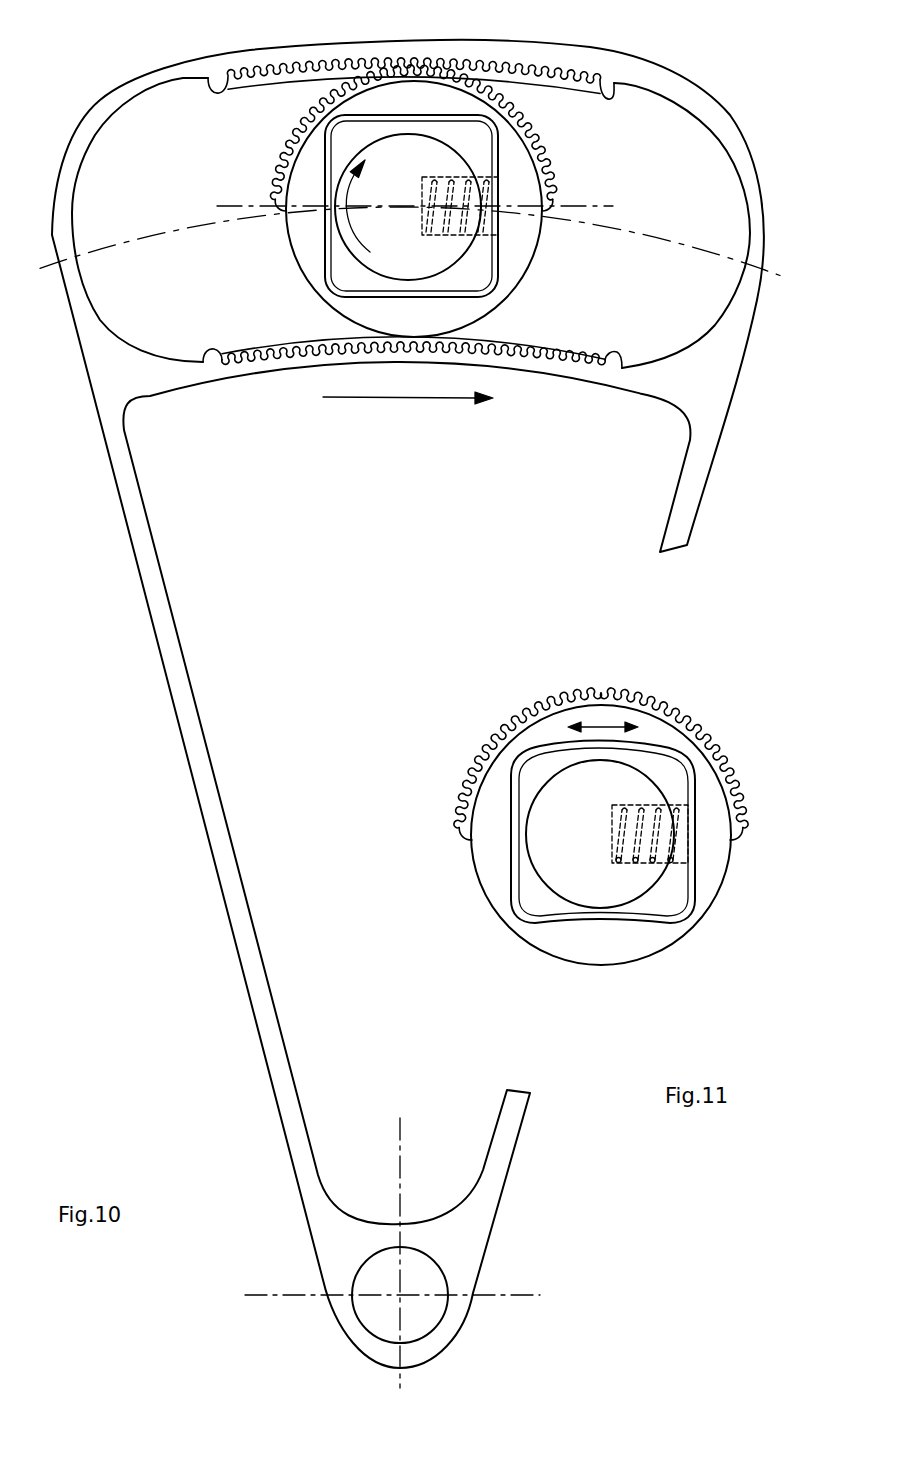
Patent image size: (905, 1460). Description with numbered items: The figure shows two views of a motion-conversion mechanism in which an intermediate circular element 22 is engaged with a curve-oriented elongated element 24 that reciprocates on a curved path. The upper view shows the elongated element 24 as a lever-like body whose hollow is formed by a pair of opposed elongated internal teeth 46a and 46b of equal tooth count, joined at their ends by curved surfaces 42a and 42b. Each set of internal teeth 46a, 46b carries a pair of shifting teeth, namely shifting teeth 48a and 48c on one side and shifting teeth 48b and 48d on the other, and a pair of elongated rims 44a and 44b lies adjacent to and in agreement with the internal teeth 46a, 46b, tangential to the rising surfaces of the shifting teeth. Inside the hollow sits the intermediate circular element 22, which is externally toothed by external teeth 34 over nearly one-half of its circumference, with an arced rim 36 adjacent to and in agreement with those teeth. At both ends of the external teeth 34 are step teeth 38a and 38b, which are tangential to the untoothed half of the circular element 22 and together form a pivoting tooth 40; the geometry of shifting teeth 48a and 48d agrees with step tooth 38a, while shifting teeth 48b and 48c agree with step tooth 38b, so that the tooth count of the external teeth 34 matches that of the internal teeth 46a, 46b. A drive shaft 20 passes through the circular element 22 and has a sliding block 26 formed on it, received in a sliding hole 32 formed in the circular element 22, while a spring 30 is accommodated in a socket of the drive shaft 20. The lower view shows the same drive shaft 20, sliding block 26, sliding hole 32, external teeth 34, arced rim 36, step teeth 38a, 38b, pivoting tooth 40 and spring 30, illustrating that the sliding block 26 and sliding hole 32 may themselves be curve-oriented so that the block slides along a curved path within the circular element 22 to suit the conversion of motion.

In FIG. 10, the drive shaft 20 is at (457, 250).
In FIG. 11, the drive shaft 20 is at (640, 783).
In FIG. 10, the intermediate circular element 22 is at (457, 313).
In FIG. 11, the intermediate circular element 22 is at (597, 947).
In FIG. 10, the elongated element 24 is at (677, 387).
In FIG. 10, the sliding block 26 is at (473, 270).
In FIG. 11, the sliding block 26 is at (640, 910).
In FIG. 11, the spring 30 is at (663, 860).
In FIG. 11, the sliding hole 32 is at (513, 870).
In FIG. 10, the external teeth 34 is at (303, 127).
In FIG. 11, the external teeth 34 is at (543, 705).
In FIG. 10, the arced rim 36 is at (520, 137).
In FIG. 11, the arced rim 36 is at (635, 702).
In FIG. 10, the step tooth 38a is at (280, 200).
In FIG. 11, the step tooth 38a is at (472, 828).
In FIG. 10, the step tooth 38b is at (543, 197).
In FIG. 11, the step tooth 38b is at (730, 828).
In FIG. 10, the pivoting tooth 40 is at (297, 277).
In FIG. 11, the pivoting tooth 40 is at (527, 943).
In FIG. 10, the curved surface 42a is at (73, 217).
In FIG. 10, the curved surface 42b is at (747, 210).
In FIG. 10, the elongated rim 44a is at (557, 75).
In FIG. 10, the elongated rim 44b is at (317, 340).
In FIG. 10, the elongated internal teeth 46a is at (290, 67).
In FIG. 10, the elongated internal teeth 46b is at (290, 358).
In FIG. 10, the shifting tooth 48a is at (222, 88).
In FIG. 10, the shifting tooth 48b is at (210, 358).
In FIG. 10, the shifting tooth 48c is at (613, 97).
In FIG. 10, the shifting tooth 48d is at (610, 360).